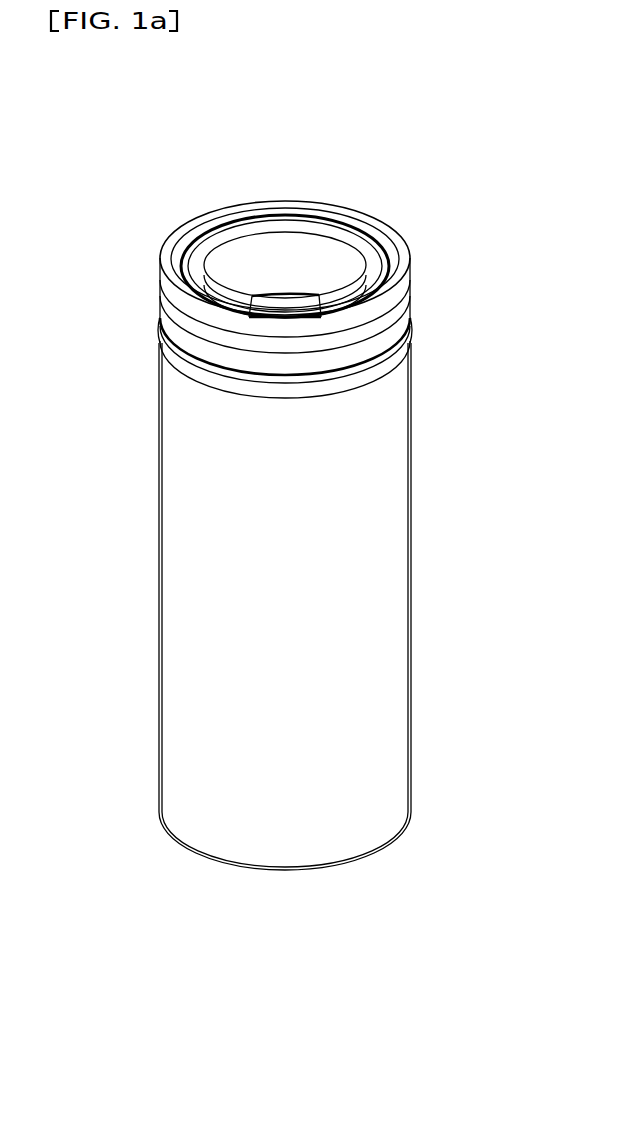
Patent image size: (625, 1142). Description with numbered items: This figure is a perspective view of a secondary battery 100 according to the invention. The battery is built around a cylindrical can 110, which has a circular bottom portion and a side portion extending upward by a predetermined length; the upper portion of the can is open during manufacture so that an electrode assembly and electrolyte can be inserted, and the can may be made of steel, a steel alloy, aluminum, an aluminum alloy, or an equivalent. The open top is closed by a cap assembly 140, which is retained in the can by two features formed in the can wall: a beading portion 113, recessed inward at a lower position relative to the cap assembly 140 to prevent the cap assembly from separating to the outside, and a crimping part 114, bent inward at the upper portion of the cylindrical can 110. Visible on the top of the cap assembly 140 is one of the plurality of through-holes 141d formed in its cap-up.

The secondary battery 100 is at (397, 158).
The cylindrical can 110 is at (410, 560).
The beading portion 113 is at (408, 322).
The crimping part 114 is at (393, 255).
The cap assembly 140 is at (288, 252).
The through-holes 141d is at (275, 307).